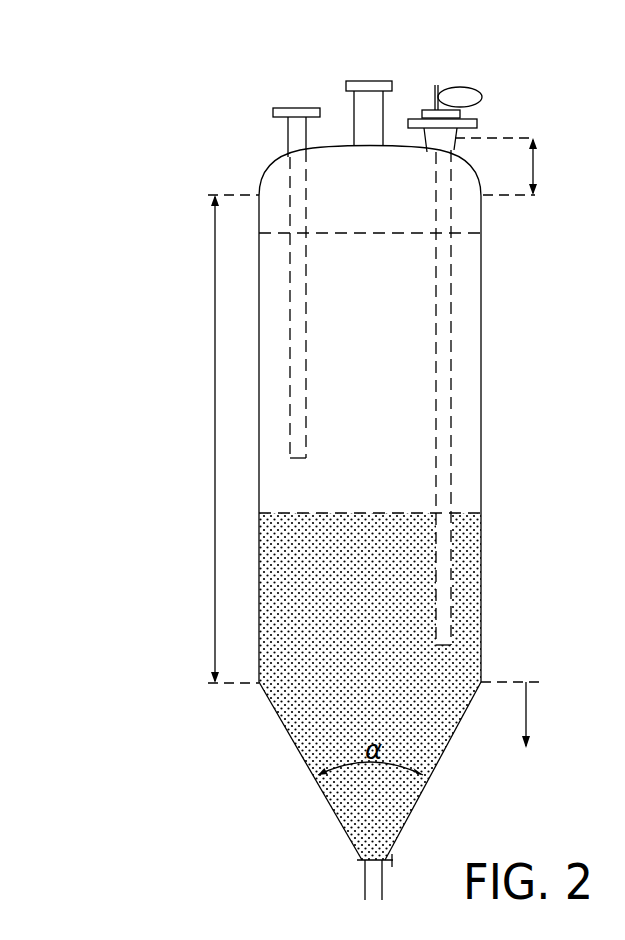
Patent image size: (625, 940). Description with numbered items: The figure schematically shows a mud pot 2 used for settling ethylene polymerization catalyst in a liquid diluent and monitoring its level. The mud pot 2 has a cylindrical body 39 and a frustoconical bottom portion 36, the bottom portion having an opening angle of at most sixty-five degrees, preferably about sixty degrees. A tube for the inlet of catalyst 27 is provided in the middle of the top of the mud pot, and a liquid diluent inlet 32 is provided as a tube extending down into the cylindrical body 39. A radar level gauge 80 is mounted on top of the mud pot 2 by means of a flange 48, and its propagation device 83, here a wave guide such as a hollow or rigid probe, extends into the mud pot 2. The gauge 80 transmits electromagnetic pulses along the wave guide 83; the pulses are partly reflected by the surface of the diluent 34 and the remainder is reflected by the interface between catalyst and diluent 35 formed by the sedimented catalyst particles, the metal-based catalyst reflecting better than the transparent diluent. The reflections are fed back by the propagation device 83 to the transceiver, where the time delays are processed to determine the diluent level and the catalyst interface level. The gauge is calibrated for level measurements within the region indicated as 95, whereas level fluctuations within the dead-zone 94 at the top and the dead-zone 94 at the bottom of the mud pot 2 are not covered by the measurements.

The mud pot 2 is at (154, 110).
The tube for the inlet of catalyst 27 is at (362, 107).
The liquid diluent inlet 32 is at (284, 142).
The surface of the diluent 34 is at (490, 233).
The interface between catalyst and diluent 35 is at (490, 513).
The frustoconical bottom portion 36 is at (357, 808).
The cylindrical body 39 is at (385, 391).
The flange 48 is at (480, 113).
The radar level gauge 80 is at (460, 88).
The propagation device 83 is at (443, 381).
The dead-zone 94 is at (535, 165).
The calibrated measurement region 95 is at (214, 440).